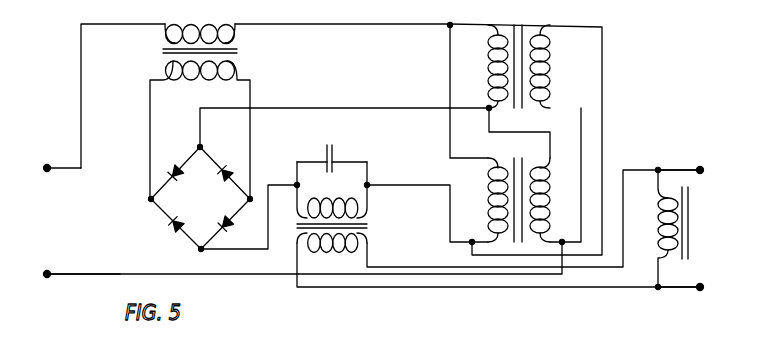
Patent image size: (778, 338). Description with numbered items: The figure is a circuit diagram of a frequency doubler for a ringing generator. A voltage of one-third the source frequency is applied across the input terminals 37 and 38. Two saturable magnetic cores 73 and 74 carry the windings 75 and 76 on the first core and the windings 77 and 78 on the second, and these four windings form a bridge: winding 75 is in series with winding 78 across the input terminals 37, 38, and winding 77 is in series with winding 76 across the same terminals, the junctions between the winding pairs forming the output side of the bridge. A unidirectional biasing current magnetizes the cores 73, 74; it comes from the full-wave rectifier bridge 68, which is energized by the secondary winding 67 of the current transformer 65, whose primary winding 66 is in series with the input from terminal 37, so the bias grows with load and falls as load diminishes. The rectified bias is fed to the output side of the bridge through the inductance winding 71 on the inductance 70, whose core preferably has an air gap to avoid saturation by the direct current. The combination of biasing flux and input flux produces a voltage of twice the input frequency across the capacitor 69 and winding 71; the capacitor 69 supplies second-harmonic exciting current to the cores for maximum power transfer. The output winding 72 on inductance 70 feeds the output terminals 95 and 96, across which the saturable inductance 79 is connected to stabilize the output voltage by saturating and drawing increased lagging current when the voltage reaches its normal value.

The input terminal 37 is at (52, 160).
The input terminal 38 is at (51, 269).
The current transformer 65 is at (237, 52).
The primary winding 66 is at (215, 22).
The secondary winding 67 is at (194, 88).
The full-wave rectifier bridge 68 is at (220, 163).
The capacitor 69 is at (329, 145).
The inductance 70 is at (367, 226).
The inductance winding 71 is at (325, 192).
The output winding 72 is at (331, 256).
The saturable magnetic core 73 is at (521, 21).
The saturable magnetic core 74 is at (524, 150).
The winding 75 is at (488, 85).
The winding 76 is at (552, 80).
The winding 77 is at (485, 207).
The winding 78 is at (551, 209).
The saturable inductance 79 is at (658, 238).
The output terminal 95 is at (700, 158).
The output terminal 96 is at (700, 276).